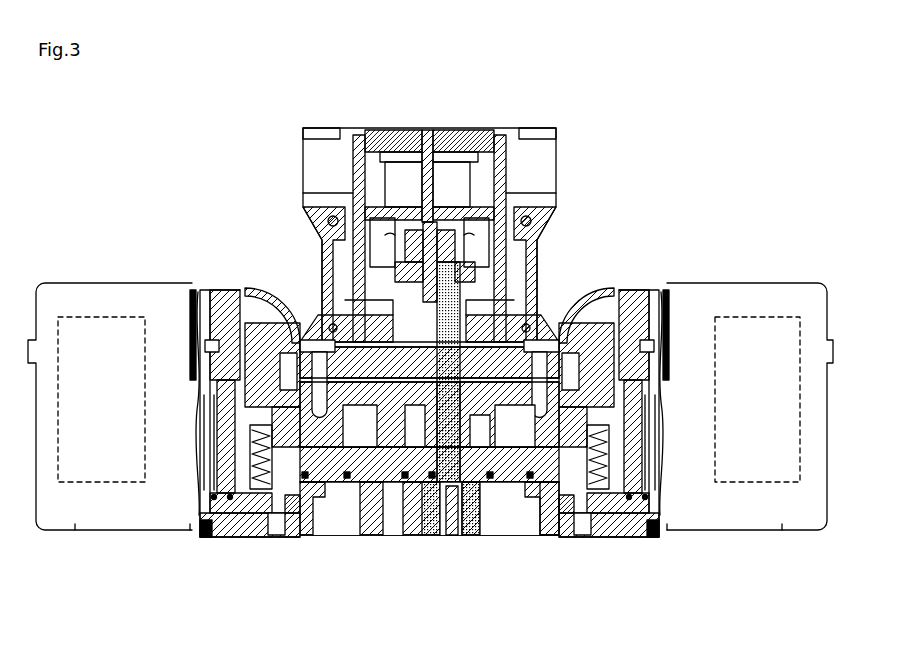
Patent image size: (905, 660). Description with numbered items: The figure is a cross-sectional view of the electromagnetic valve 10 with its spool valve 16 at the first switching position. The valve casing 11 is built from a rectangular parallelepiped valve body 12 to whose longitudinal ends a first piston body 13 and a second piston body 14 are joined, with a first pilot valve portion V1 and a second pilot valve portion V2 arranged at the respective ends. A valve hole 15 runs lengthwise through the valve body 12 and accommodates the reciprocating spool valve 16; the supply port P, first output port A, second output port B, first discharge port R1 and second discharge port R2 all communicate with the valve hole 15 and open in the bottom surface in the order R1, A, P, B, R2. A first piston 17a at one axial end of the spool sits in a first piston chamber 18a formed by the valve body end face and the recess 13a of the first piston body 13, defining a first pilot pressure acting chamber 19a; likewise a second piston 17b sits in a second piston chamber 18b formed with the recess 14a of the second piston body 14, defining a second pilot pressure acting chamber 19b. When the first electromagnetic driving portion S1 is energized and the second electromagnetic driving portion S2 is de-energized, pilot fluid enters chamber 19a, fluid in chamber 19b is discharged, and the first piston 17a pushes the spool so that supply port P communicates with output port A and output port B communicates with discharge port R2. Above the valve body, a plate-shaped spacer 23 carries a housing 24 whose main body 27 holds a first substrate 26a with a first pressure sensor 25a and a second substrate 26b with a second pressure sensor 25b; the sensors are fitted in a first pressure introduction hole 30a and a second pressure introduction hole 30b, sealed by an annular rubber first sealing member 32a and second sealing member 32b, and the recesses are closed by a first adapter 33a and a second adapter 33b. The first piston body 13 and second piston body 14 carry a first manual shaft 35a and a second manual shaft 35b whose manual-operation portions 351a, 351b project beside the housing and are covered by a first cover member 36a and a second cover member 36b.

The electromagnetic valve 10 is at (100, 160).
The valve casing 11 is at (320, 540).
The valve body 12 is at (542, 540).
The first piston body 13 is at (617, 540).
The recess 13a is at (640, 442).
The second piston body 14 is at (221, 540).
The recess 14a is at (225, 442).
The valve hole 15 is at (451, 520).
The spool valve 16 is at (380, 468).
The first piston 17a is at (568, 535).
The second piston 17b is at (262, 535).
The first piston chamber 18a is at (588, 530).
The second piston chamber 18b is at (283, 530).
The first pilot pressure acting chamber 19a is at (648, 503).
The second pilot pressure acting chamber 19b is at (214, 503).
The spacer 23 is at (546, 334).
The housing 24 is at (363, 128).
The first pressure sensor 25a is at (478, 232).
The second pressure sensor 25b is at (385, 245).
The first substrate 26a is at (506, 183).
The second substrate 26b is at (364, 200).
The main body 27 is at (432, 146).
The first pressure introduction hole 30a is at (466, 205).
The second pressure introduction hole 30b is at (394, 200).
The first sealing member 32a is at (505, 266).
The second sealing member 32b is at (398, 262).
The first adapter 33a is at (556, 131).
The second adapter 33b is at (303, 131).
The first manual shaft 35a is at (655, 416).
The second manual shaft 35b is at (200, 416).
The manual-operation portion 351a is at (637, 298).
The manual-operation portion 351b is at (222, 298).
The first cover member 36a is at (628, 284).
The second cover member 36b is at (244, 290).
The first output port A is at (467, 530).
The second output port B is at (388, 515).
The supply port P is at (427, 532).
The first discharge port R1 is at (512, 510).
The second discharge port R2 is at (340, 510).
The first electromagnetic driving portion S1 is at (762, 318).
The second electromagnetic driving portion S2 is at (78, 318).
The first pilot valve portion V1 is at (816, 286).
The second pilot valve portion V2 is at (45, 286).